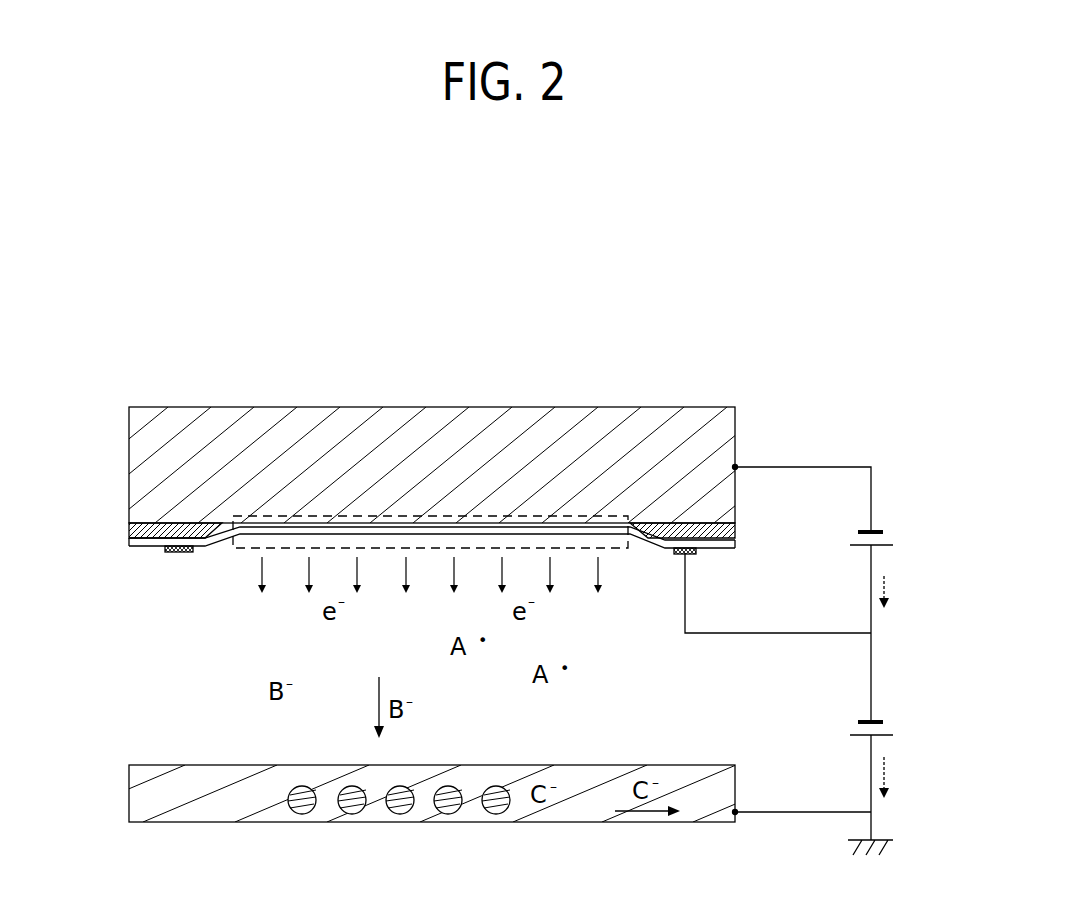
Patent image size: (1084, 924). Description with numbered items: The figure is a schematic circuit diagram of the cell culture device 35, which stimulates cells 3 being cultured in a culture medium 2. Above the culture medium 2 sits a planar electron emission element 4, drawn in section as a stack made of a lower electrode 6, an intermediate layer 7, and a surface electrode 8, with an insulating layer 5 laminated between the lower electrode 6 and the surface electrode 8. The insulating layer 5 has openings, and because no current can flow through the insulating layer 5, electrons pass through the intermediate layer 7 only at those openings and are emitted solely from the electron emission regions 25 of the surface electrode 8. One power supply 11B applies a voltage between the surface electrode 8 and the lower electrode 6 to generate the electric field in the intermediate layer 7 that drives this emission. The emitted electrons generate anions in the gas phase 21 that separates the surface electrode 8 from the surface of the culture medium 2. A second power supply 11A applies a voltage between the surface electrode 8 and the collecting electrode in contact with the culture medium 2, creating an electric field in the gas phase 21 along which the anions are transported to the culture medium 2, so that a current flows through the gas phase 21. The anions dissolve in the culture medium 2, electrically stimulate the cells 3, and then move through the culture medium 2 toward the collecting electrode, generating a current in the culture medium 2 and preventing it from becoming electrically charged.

The culture medium 2 is at (192, 783).
The cells 3 is at (301, 802).
The electron emission element 4 is at (545, 377).
The insulating layer 5 is at (158, 531).
The lower electrode 6 is at (240, 430).
The intermediate layer 7 is at (325, 525).
The surface electrode 8 is at (195, 553).
The gas phase 21 is at (333, 656).
The electron emission regions 25 is at (463, 520).
The cell culture device 35 is at (862, 356).
The power supply 11A is at (883, 728).
The power supply 11B is at (883, 538).